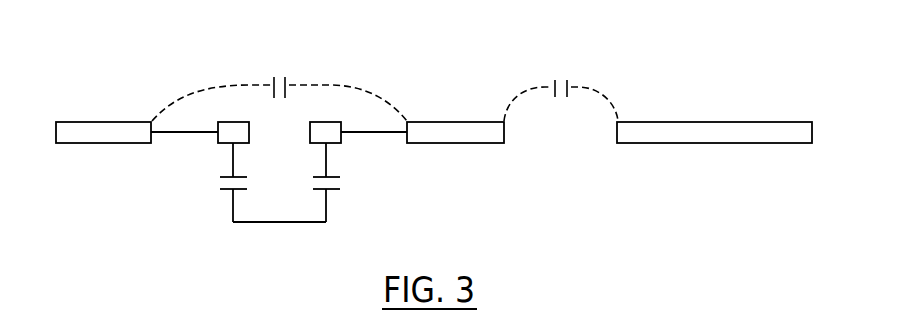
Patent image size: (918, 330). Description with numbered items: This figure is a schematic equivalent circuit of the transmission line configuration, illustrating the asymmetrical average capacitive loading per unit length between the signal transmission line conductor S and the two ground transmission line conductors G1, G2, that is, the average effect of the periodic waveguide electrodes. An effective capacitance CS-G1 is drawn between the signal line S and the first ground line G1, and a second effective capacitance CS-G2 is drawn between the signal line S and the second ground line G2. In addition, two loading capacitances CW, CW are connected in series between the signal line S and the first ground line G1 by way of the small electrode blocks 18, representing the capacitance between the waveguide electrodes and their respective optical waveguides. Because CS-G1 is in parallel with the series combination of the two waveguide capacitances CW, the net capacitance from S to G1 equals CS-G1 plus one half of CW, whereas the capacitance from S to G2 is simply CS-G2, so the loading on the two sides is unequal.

The contact 18 is at (280, 145).
The first ground transmission line conductor G1 is at (103, 115).
The signal transmission line conductor S is at (455, 115).
The second ground transmission line conductor G2 is at (714, 116).
The effective capacitance between signal line S and ground line G1 CS-G1 is at (279, 80).
The effective capacitance between signal line S and ground line G2 CS-G2 is at (561, 80).
The waveguide loading capacitance CW is at (280, 187).